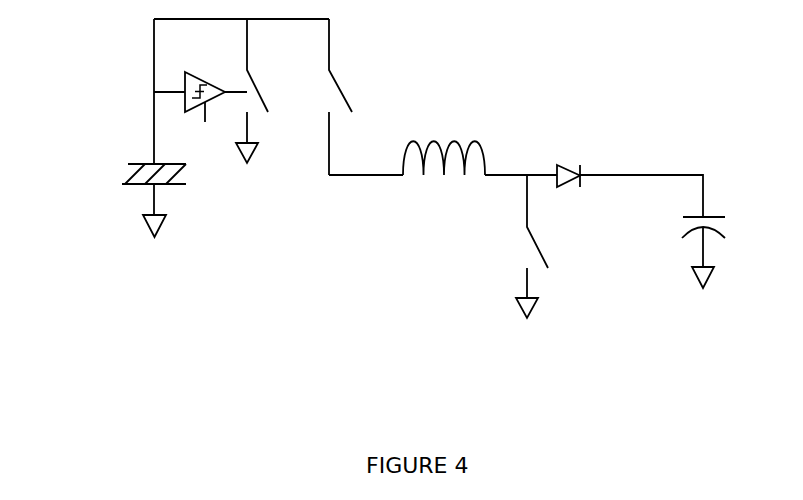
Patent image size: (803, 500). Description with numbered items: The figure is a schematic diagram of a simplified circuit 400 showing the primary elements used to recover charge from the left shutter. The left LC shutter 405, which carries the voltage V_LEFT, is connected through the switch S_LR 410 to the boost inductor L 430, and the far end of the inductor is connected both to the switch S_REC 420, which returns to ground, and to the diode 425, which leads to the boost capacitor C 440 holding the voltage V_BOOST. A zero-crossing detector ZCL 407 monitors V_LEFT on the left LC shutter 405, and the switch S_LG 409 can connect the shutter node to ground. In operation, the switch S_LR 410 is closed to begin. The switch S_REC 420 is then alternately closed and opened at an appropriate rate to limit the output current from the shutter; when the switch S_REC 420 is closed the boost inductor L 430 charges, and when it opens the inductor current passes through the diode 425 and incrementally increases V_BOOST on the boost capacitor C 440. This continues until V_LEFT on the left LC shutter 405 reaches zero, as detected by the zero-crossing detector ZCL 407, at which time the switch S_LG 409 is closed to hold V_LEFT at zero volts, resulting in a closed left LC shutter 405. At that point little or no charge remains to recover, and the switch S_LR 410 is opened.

The circuit 400 is at (258, 349).
The left LC shutter 405 is at (149, 209).
The zero-crossing detector ZCL 407 is at (204, 90).
The switch S_LG 409 is at (271, 91).
The switch S_LR 410 is at (359, 97).
The switch S_REC 420 is at (556, 246).
The diode D2 425 is at (587, 160).
The boost inductor L 430 is at (445, 171).
The boost capacitor C 440 is at (698, 247).